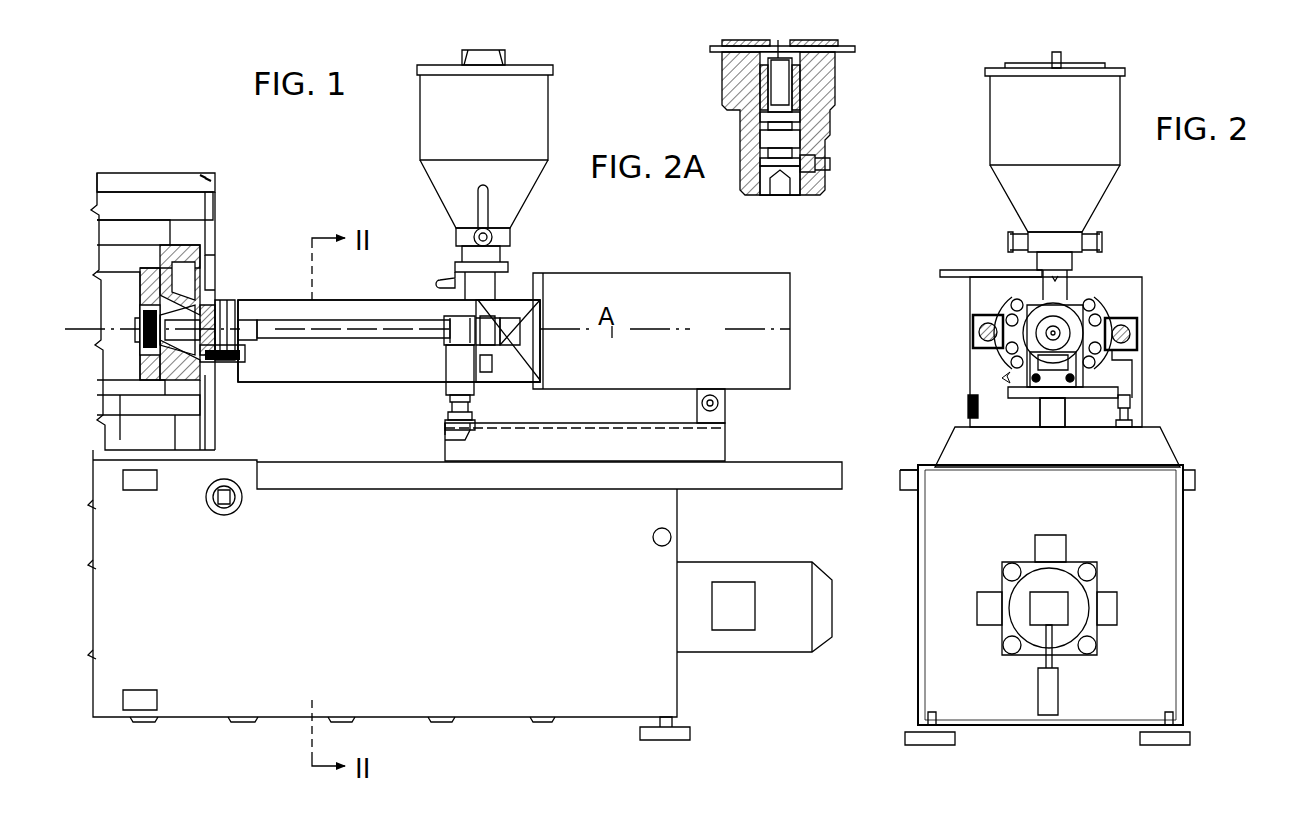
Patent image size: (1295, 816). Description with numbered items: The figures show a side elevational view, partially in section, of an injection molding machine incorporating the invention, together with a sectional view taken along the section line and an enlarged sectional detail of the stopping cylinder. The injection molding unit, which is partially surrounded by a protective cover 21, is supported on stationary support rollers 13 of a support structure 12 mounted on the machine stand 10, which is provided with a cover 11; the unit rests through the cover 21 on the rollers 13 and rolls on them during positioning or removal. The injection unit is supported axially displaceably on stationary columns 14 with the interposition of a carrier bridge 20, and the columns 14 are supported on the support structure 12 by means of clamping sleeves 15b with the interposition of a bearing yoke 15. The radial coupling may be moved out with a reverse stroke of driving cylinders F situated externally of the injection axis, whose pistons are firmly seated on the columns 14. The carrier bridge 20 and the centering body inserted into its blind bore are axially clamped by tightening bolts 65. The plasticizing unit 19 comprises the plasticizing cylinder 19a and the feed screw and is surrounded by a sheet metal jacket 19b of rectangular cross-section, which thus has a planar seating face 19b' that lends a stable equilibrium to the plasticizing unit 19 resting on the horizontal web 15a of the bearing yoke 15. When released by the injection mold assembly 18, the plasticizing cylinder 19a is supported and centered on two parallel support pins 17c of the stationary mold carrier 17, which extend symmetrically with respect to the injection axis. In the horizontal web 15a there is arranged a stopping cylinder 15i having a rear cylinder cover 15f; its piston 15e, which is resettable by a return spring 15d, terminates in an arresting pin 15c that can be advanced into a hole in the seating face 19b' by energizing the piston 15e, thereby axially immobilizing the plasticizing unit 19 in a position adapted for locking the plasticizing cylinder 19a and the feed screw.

In FIG. 1, the machine stand 10 is at (635, 675).
In FIG. 2, the machine stand 10 is at (916, 688).
In FIG. 1, the cover 11 is at (720, 483).
In FIG. 2, the cover 11 is at (910, 478).
In FIG. 1, the support structure 12 is at (695, 446).
In FIG. 1, the support rollers 13 is at (722, 403).
In FIG. 2, the support rollers 13 is at (968, 400).
In FIG. 1, the stationary columns 14 is at (285, 330).
In FIG. 2, the stationary columns 14 is at (1140, 335).
In FIG. 1, the bearing yoke 15 is at (458, 372).
In FIG. 2, the bearing yoke 15 is at (1125, 380).
In FIG. 2, the horizontal web 15a is at (1058, 392).
In FIG. 1, the clamping sleeves 15b is at (450, 332).
In FIG. 2A, the arresting pin 15c is at (776, 80).
In FIG. 2A, the return spring 15d is at (780, 92).
In FIG. 2A, the piston 15e is at (795, 118).
In FIG. 2A, the rear cylinder cover 15f is at (790, 175).
In FIG. 2A, the stopping cylinder 15i is at (832, 132).
In FIG. 2, the stopping cylinder 15i is at (1052, 412).
In FIG. 1, the stationary mold carrier 17 is at (200, 280).
In FIG. 1, the support pins 17c is at (222, 356).
In FIG. 1, the injection mold assembly 18 is at (148, 285).
In FIG. 2, the plasticizing unit 19 is at (1082, 300).
In FIG. 1, the plasticizing cylinder 19a is at (200, 318).
In FIG. 2, the plasticizing cylinder 19a is at (1100, 320).
In FIG. 1, the sheet metal jacket 19b is at (389, 366).
In FIG. 2, the sheet metal jacket 19b is at (975, 343).
In FIG. 1, the planar seating face 19b' is at (389, 366).
In FIG. 2A, the planar seating face 19b' is at (761, 63).
In FIG. 2, the planar seating face 19b' is at (1079, 425).
In FIG. 1, the carrier bridge 20 is at (510, 318).
In FIG. 2, the carrier bridge 20 is at (1005, 300).
In FIG. 1, the protective cover 21 is at (680, 292).
In FIG. 2, the tightening bolts 65 is at (1095, 356).
In FIG. 2, the driving cylinders F is at (968, 332).